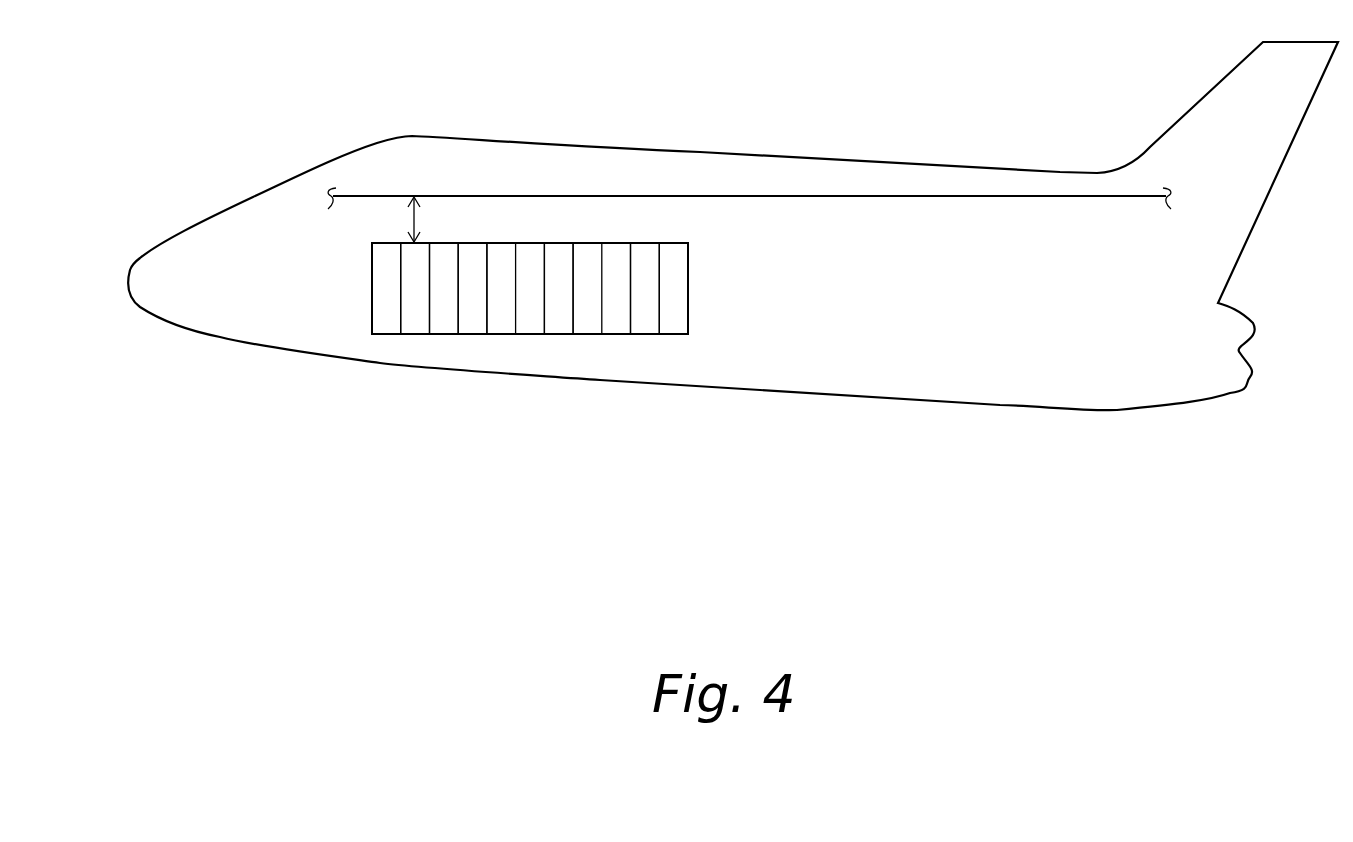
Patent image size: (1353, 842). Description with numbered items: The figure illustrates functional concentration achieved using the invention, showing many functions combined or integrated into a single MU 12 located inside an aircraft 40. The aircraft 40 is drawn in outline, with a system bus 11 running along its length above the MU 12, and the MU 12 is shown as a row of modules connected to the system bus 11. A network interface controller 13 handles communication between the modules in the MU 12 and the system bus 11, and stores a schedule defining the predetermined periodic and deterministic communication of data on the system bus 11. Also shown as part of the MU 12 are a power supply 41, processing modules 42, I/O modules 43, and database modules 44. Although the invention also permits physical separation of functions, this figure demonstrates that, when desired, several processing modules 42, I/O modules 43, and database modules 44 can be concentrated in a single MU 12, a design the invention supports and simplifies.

The aircraft 40 is at (768, 157).
The system bus 11 is at (950, 197).
The modular unit 12 is at (371, 243).
The power supply 41 is at (371, 293).
The network interface controller 13 is at (413, 323).
The processing modules 42 is at (498, 330).
The I/O modules 43 is at (587, 323).
The database modules 44 is at (668, 323).